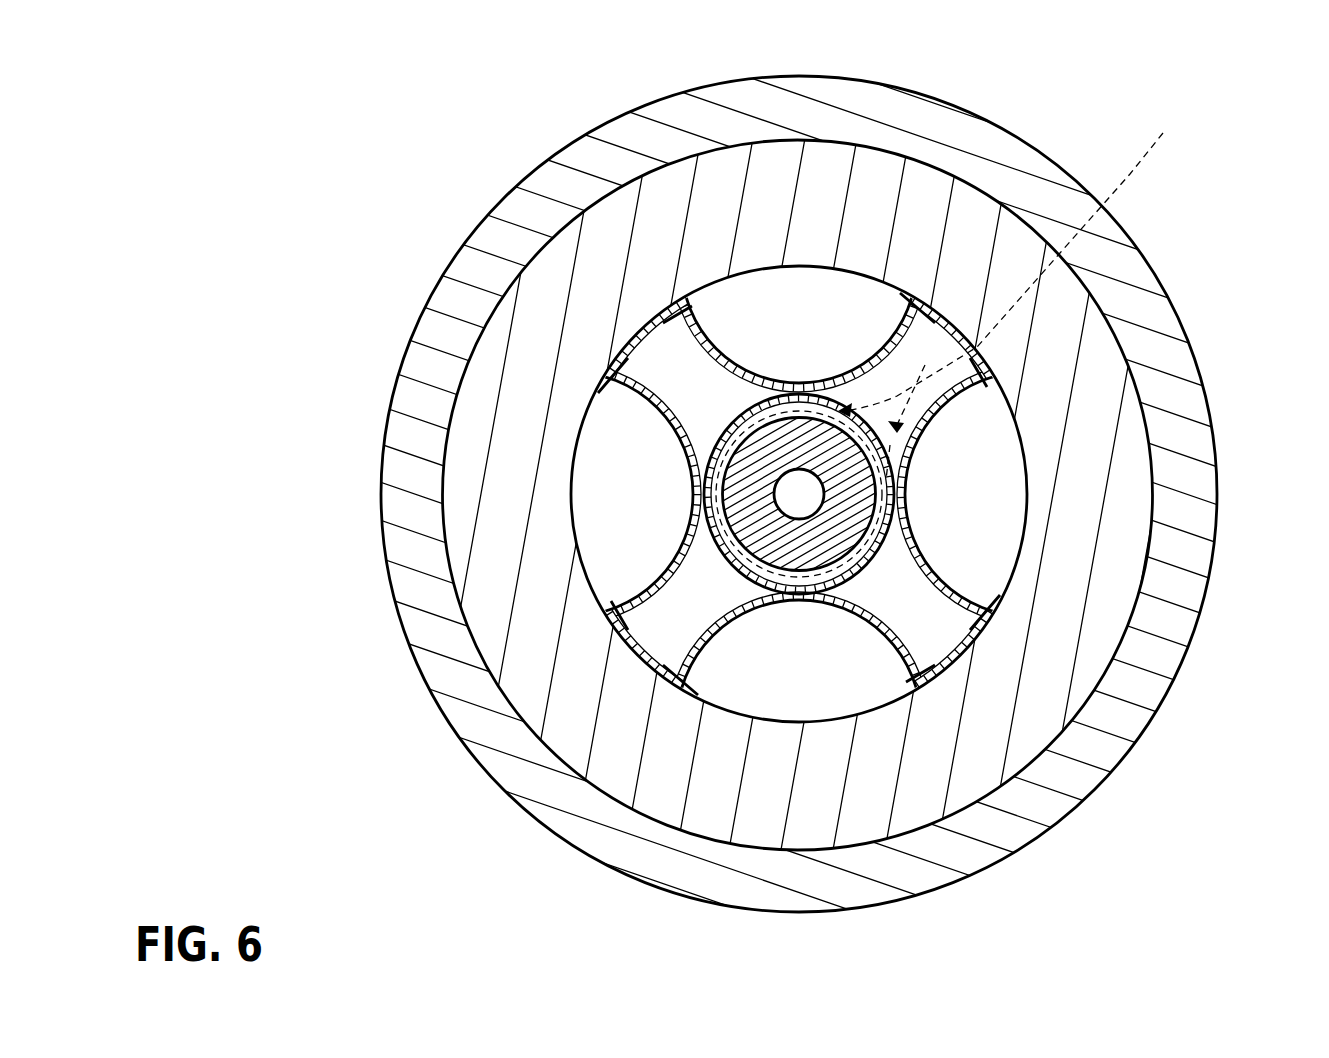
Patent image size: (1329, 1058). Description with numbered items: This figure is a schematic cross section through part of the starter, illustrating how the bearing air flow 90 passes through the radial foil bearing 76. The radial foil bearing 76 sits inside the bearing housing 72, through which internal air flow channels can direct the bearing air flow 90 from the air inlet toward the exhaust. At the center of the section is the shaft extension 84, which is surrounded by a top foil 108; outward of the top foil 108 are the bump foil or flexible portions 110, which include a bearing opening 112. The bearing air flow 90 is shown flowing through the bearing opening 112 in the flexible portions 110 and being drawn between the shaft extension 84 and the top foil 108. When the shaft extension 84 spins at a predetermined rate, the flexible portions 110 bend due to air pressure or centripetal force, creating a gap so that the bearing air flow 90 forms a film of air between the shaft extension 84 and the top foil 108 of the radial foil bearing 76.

The bearing housing 72 is at (618, 117).
The radial foil bearing 76 is at (1272, 68).
The shaft extension 84 is at (750, 563).
The bearing air flow 90 is at (1130, 174).
The top foil 108 is at (870, 560).
The flexible portions 110 is at (935, 558).
The bearing opening 112 is at (977, 357).